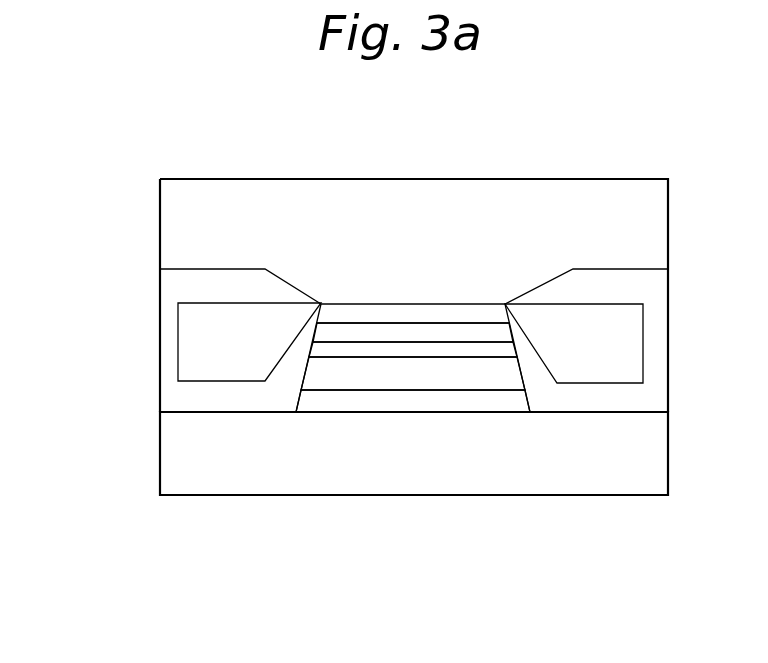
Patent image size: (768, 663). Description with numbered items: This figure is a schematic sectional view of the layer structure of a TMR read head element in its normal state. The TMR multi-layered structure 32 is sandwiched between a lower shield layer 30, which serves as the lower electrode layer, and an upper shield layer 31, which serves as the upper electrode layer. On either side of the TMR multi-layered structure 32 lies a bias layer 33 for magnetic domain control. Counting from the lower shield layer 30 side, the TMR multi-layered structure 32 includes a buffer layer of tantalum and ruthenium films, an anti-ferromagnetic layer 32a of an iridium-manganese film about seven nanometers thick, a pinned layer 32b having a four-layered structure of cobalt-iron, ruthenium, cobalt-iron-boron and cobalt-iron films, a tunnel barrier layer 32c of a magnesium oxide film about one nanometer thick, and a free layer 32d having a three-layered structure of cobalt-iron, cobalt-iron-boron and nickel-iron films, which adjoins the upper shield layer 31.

The lower shield layer 30 is at (653, 446).
The upper shield layer 31 is at (652, 217).
The TMR multi-layered structure 32 is at (444, 470).
The anti-ferromagnetic layer 32a is at (413, 484).
The pinned layer 32b is at (402, 377).
The tunnel barrier layer 32c is at (442, 350).
The free layer 32d is at (488, 333).
The bias layer 33 is at (197, 340).